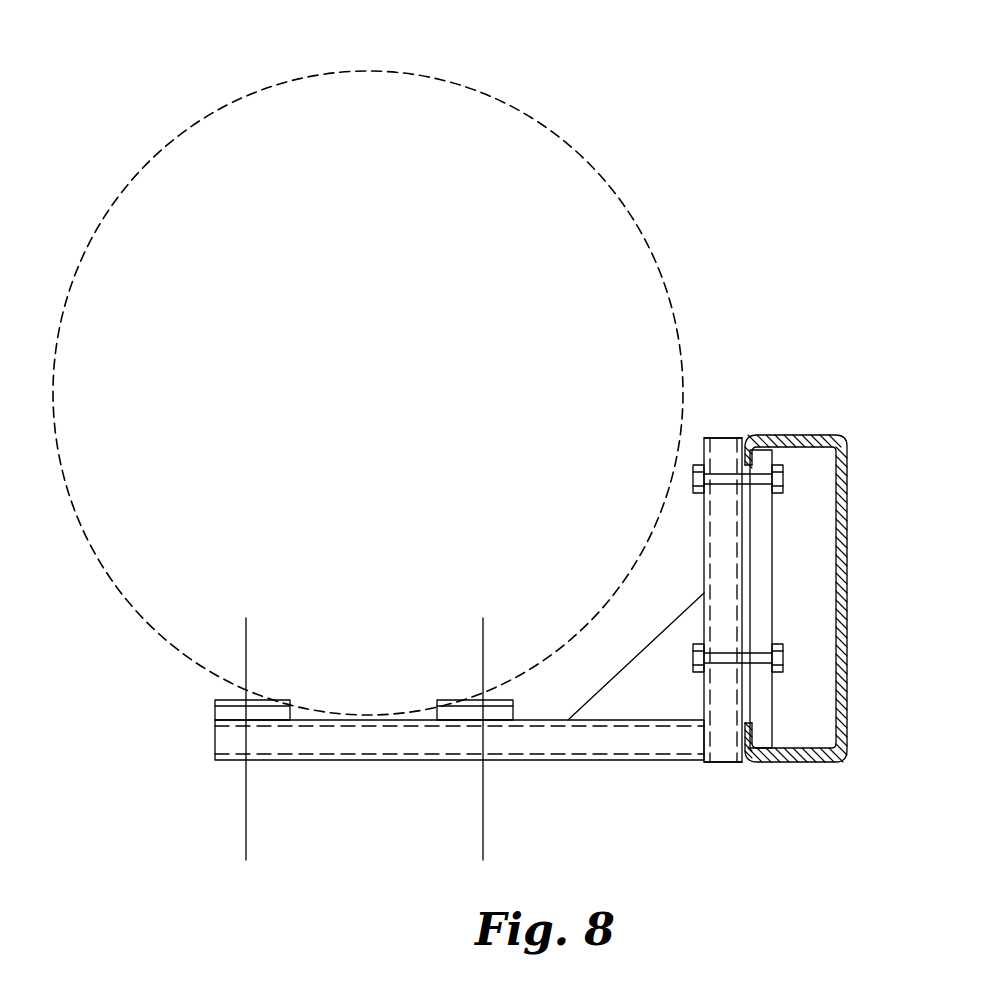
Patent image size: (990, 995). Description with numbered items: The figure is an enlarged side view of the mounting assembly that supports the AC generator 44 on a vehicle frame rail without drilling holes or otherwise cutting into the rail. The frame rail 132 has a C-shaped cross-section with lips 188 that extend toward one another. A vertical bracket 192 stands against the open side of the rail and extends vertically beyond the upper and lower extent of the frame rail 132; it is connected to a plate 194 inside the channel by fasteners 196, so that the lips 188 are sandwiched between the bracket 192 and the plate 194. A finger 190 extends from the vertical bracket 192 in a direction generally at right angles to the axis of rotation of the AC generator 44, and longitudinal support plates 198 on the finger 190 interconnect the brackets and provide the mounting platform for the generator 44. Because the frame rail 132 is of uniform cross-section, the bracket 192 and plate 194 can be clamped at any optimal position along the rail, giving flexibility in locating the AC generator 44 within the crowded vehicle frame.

The AC generator 44 is at (627, 211).
The frame rail 132 is at (848, 618).
The lips 188 is at (722, 438).
The fingers 190 is at (587, 748).
The vertical brackets 192 is at (704, 538).
The plates 194 is at (773, 543).
The fasteners 196 is at (695, 467).
The longitudinal support plates 198 is at (248, 700).